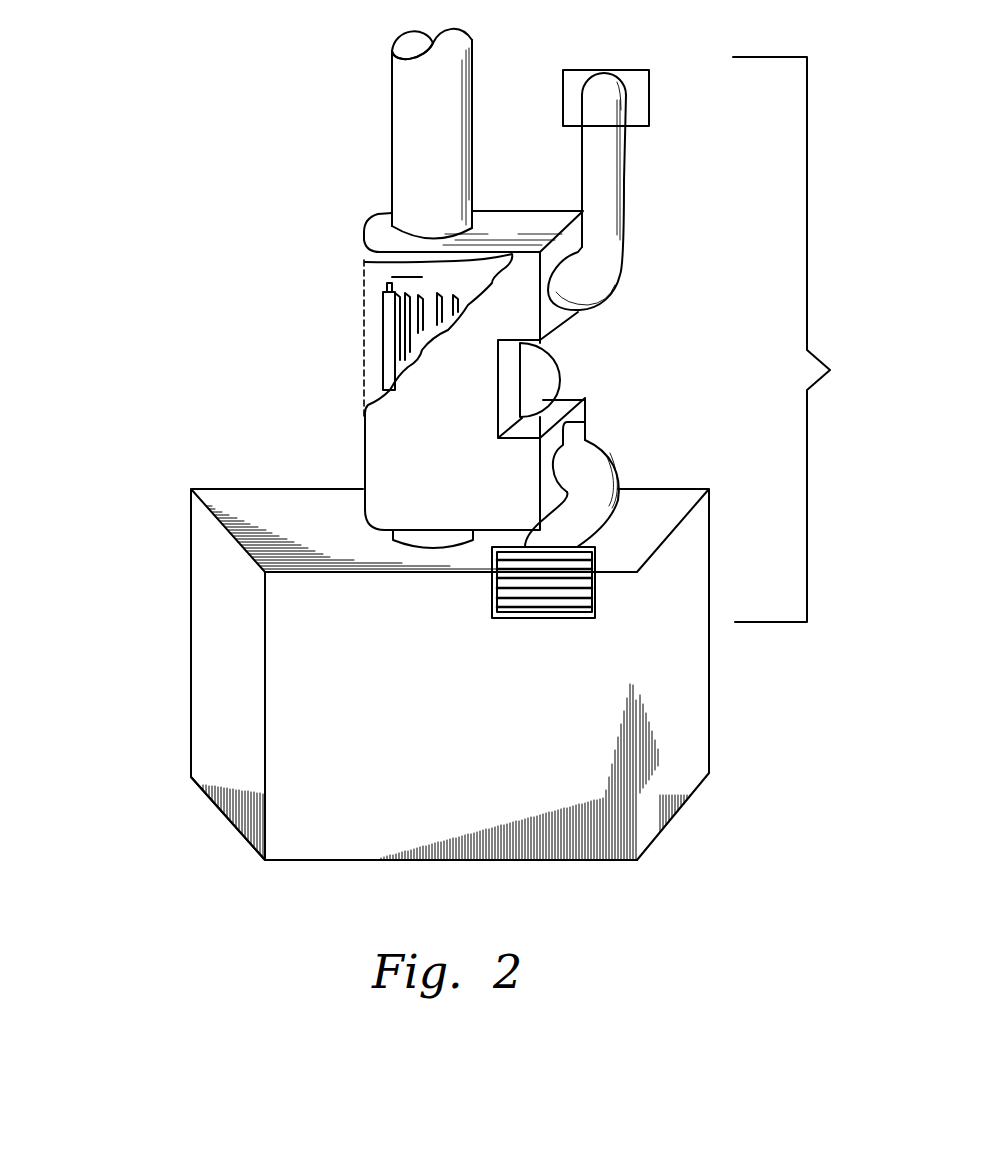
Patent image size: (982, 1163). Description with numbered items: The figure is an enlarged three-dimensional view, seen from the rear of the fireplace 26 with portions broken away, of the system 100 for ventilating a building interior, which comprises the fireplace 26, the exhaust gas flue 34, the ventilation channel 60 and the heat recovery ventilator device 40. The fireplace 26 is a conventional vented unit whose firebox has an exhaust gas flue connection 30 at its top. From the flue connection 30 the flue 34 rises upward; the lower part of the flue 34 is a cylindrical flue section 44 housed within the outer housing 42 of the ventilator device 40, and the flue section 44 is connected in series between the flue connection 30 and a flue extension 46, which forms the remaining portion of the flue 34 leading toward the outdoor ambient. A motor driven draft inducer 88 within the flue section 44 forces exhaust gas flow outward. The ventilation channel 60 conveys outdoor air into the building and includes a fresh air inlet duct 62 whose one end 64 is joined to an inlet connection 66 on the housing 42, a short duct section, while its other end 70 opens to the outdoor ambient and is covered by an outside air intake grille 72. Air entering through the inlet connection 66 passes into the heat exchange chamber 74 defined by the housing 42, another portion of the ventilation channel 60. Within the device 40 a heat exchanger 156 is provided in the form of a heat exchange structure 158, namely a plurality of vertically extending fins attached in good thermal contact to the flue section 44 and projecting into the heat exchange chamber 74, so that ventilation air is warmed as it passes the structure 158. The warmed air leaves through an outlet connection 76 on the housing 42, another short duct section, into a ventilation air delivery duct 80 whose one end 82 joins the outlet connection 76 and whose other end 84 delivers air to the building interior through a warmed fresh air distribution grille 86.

The fireplace 26 is at (545, 765).
The exhaust gas flue connection 30 is at (392, 537).
The flue 34 is at (391, 88).
The heat recovery ventilator device 40 is at (356, 348).
The outer housing 42 is at (392, 448).
The cylindrical flue section 44 is at (420, 277).
The flue extension 46 is at (437, 165).
The ventilation channel 60 is at (804, 339).
The fresh air inlet duct 62 is at (590, 497).
The end of the fresh air inlet duct 64 is at (572, 452).
The inlet connection 66 is at (580, 417).
The other end of the fresh air inlet duct 70 is at (597, 527).
The outside air intake grille 72 is at (558, 606).
The heat exchange chamber 74 is at (373, 262).
The outlet connection 76 is at (578, 313).
The ventilation air delivery duct 80 is at (602, 202).
The end of the ventilation air delivery duct 82 is at (597, 270).
The other end of the ventilation air delivery duct 84 is at (603, 112).
The warmed fresh air distribution grille 86 is at (650, 83).
The motor driven draft inducer 88 is at (544, 373).
The system 100 is at (165, 737).
The heat exchanger 156 is at (384, 318).
The heat exchange structure 158 is at (387, 291).